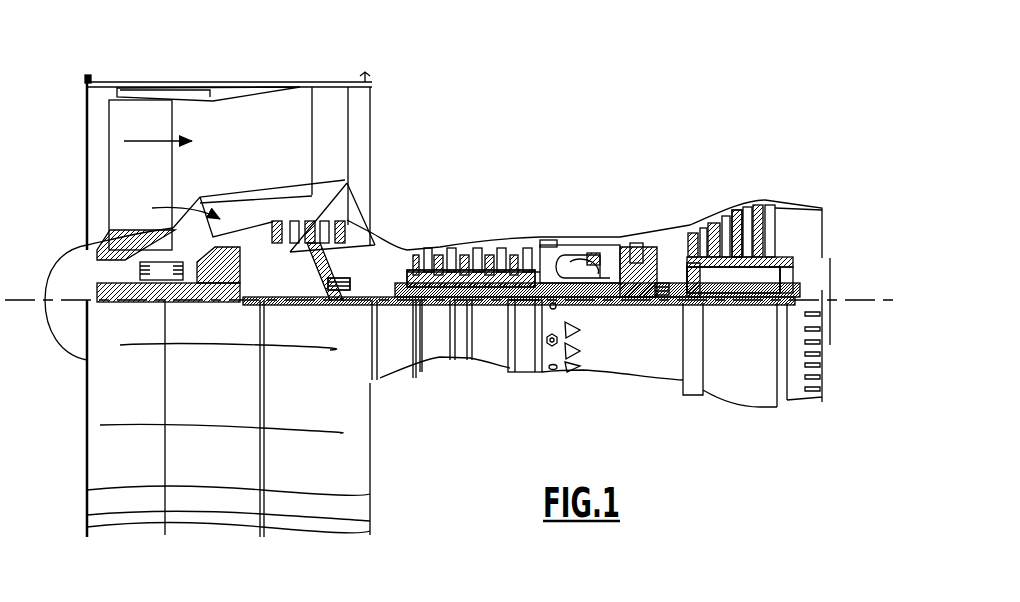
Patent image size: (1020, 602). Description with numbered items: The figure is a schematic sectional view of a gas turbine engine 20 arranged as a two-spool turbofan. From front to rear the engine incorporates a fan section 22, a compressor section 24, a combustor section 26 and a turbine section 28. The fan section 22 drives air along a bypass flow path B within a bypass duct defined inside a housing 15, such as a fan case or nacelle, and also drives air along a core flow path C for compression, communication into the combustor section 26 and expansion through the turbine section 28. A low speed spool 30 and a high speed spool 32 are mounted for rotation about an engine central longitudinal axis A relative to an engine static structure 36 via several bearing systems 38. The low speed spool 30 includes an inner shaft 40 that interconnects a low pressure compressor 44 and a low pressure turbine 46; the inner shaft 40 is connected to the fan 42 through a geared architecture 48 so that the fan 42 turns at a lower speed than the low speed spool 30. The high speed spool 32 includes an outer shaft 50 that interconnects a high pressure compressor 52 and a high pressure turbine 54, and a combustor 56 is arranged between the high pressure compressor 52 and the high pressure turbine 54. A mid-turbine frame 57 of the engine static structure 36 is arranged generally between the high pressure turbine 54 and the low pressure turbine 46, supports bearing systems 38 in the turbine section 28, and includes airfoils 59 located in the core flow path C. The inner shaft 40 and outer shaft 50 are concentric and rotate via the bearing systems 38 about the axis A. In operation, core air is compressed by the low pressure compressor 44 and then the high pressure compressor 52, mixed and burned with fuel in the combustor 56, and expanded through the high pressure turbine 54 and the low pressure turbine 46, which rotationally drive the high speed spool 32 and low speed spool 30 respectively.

The housing 15 is at (230, 85).
The gas turbine engine 20 is at (596, 114).
The fan section 22 is at (172, 70).
The compressor section 24 is at (411, 226).
The combustor section 26 is at (586, 212).
The turbine section 28 is at (716, 176).
The low speed spool 30 is at (491, 318).
The high speed spool 32 is at (526, 262).
The engine static structure 36 is at (525, 384).
The bearing systems 38 is at (333, 300).
The inner shaft 40 is at (390, 372).
The fan 42 is at (157, 180).
The low pressure compressor 44 is at (338, 222).
The low pressure turbine 46 is at (735, 203).
The geared architecture 48 is at (230, 300).
The outer shaft 50 is at (588, 303).
The high pressure compressor 52 is at (477, 250).
The high pressure turbine 54 is at (634, 232).
The combustor 56 is at (585, 257).
The mid-turbine frame 57 is at (669, 226).
The airfoils 59 is at (690, 268).
The engine central longitudinal axis A is at (897, 300).
The bypass flow path B is at (150, 138).
The core flow path C is at (176, 207).